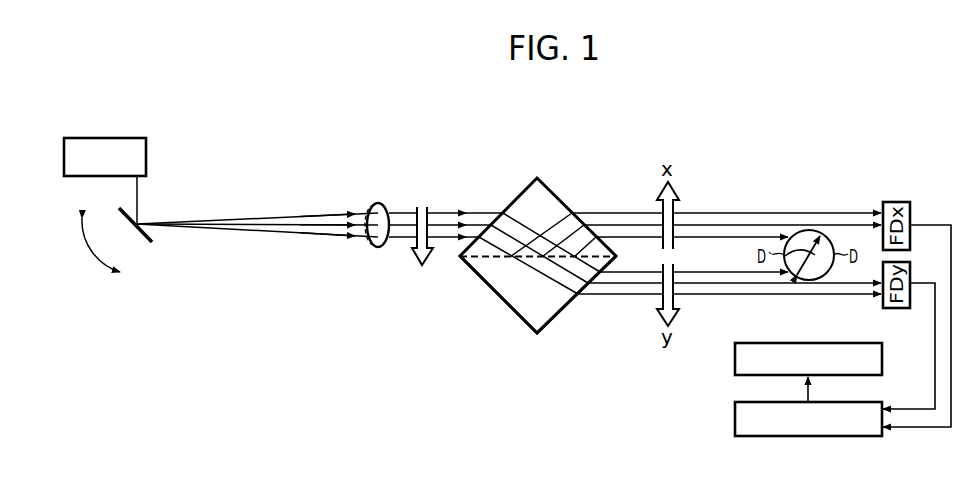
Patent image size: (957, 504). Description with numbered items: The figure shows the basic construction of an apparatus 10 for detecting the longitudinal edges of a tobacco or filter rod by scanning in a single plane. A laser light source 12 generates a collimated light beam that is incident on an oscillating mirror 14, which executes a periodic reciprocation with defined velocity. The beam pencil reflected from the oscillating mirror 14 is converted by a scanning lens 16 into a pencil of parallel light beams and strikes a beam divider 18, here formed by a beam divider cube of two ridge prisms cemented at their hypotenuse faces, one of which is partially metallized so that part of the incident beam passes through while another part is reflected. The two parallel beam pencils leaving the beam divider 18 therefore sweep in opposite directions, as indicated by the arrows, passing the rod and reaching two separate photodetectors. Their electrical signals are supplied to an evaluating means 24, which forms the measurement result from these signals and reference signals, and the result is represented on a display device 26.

The apparatus for detecting the longitudinal edges of a rod 10 is at (519, 166).
The laser light source 12 is at (146, 152).
The oscillating mirror 14 is at (152, 242).
The scanning lens 16 is at (376, 246).
The beam divider 18 is at (505, 289).
The evaluating means 24 is at (733, 423).
The display device 26 is at (733, 362).